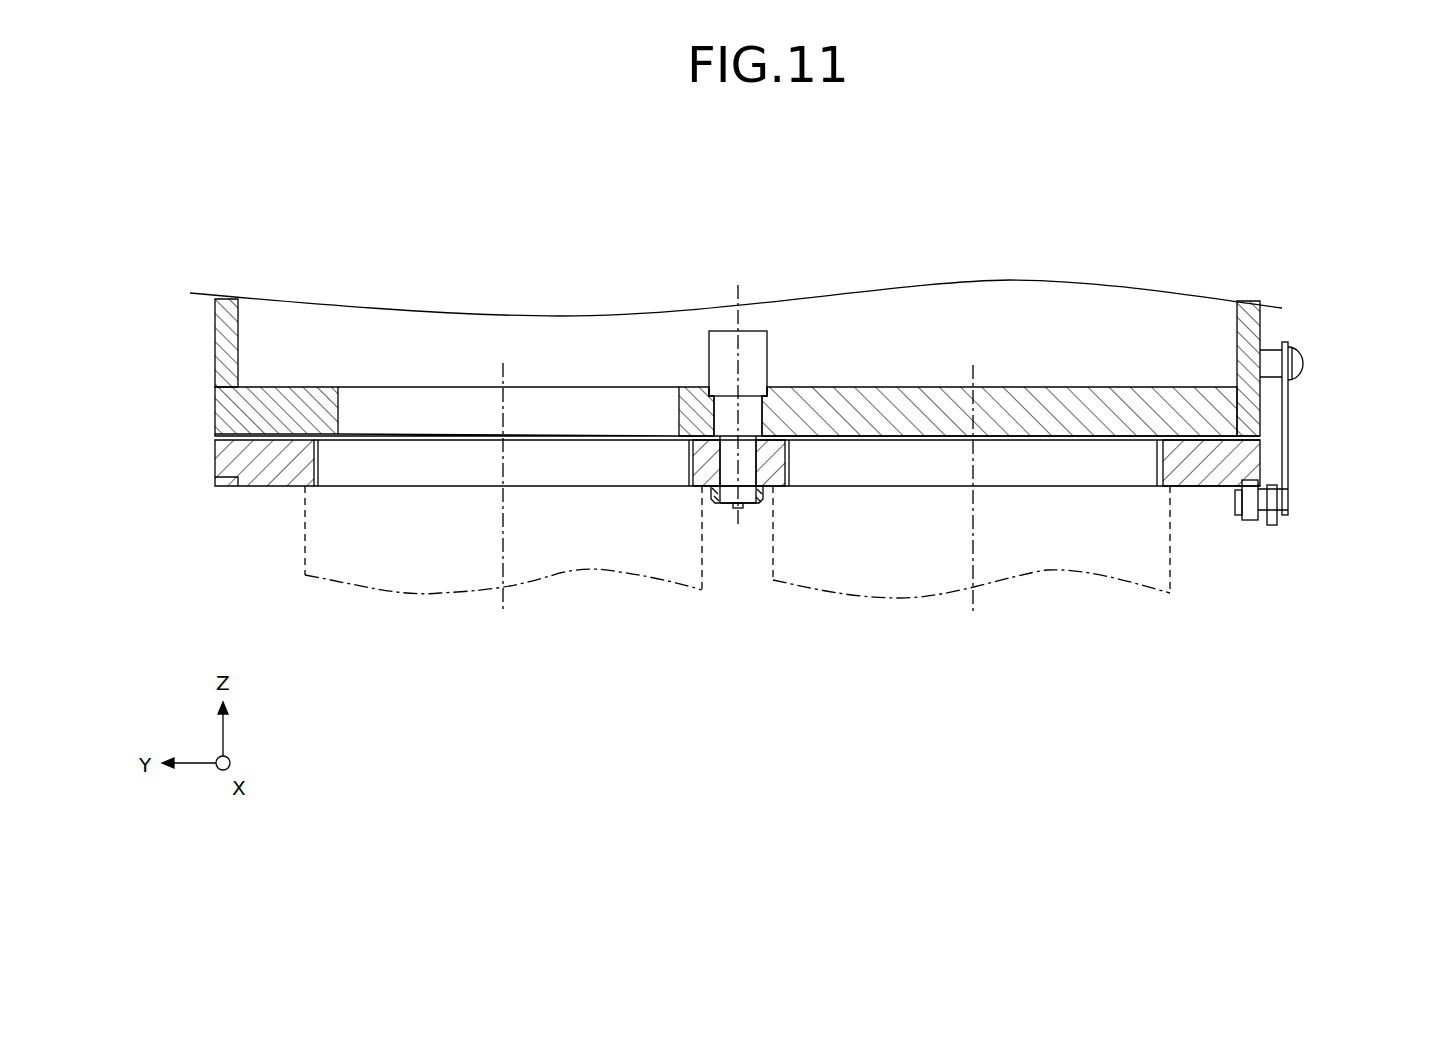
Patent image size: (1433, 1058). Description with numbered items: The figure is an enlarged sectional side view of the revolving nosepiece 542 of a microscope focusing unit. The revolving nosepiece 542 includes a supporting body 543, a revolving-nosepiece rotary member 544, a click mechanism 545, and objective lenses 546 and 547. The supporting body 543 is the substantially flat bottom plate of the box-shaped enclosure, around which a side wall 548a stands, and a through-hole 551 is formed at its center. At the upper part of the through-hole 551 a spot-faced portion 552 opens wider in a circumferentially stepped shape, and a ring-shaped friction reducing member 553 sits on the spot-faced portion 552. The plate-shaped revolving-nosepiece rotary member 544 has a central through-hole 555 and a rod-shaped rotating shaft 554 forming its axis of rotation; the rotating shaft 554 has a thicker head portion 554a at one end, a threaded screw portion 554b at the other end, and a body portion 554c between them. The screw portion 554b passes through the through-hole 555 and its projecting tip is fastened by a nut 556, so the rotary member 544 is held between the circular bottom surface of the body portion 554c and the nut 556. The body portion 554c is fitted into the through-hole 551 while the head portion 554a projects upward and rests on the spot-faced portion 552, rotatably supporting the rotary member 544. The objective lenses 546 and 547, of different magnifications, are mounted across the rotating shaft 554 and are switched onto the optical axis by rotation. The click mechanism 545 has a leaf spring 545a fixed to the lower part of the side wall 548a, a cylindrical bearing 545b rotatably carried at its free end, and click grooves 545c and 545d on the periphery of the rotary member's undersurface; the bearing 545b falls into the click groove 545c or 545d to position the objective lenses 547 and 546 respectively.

The revolving nosepiece 542 is at (897, 210).
The supporting body 543 is at (311, 395).
The revolving-nosepiece rotary member 544 is at (273, 470).
The click mechanism 545 is at (1325, 466).
The leaf spring 545a is at (1290, 412).
The bearing 545b is at (1245, 517).
The click groove 545c is at (227, 487).
The click groove 545d is at (1287, 500).
The objective lens 546 is at (432, 580).
The objective lens 547 is at (1102, 565).
The side wall 548a is at (223, 363).
The through-hole 551 is at (705, 488).
The spot-faced portion 552 is at (713, 397).
The friction reducing member 553 is at (765, 395).
The rotating shaft 554 is at (787, 423).
The head portion 554a is at (764, 345).
The screw portion 554b is at (725, 507).
The body portion 554c is at (748, 423).
The through-hole 555 is at (745, 507).
The nut 556 is at (711, 493).